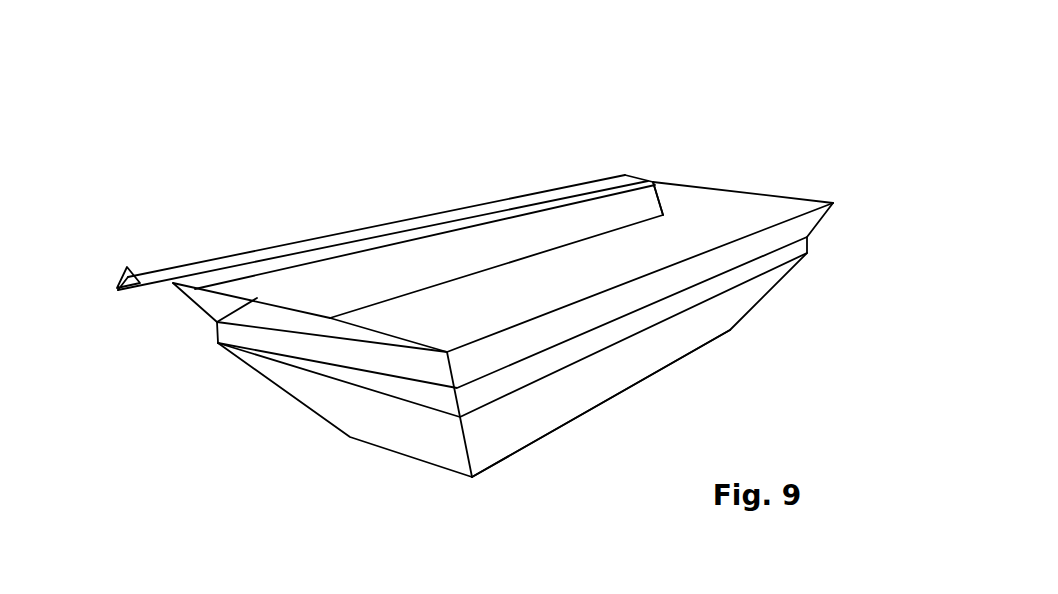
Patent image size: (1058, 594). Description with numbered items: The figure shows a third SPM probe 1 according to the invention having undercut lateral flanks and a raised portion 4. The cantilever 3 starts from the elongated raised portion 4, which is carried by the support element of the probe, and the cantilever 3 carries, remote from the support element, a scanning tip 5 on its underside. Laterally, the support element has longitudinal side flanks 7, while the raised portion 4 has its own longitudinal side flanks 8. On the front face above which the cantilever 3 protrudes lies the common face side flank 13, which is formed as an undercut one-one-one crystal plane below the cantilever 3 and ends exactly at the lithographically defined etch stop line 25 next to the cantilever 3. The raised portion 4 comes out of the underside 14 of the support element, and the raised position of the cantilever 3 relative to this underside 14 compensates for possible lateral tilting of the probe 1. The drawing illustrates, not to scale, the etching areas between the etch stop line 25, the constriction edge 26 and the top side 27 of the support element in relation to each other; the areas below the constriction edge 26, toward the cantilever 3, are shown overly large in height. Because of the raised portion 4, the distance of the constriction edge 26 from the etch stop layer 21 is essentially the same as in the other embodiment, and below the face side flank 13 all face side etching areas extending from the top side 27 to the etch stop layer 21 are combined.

The SPM probe 1 is at (350, 98).
The cantilever 3 is at (177, 270).
The raised portion 4 is at (667, 195).
The scanning tip 5 is at (112, 276).
The longitudinal side flanks 7 is at (578, 377).
The longitudinal side flanks 8 is at (558, 217).
The face side flank 13 is at (290, 303).
The underside 14 is at (488, 290).
The etch stop layer 21 is at (430, 230).
The etch stop line 25 is at (258, 288).
The constriction edge 26 is at (433, 393).
The top side 27 is at (522, 471).